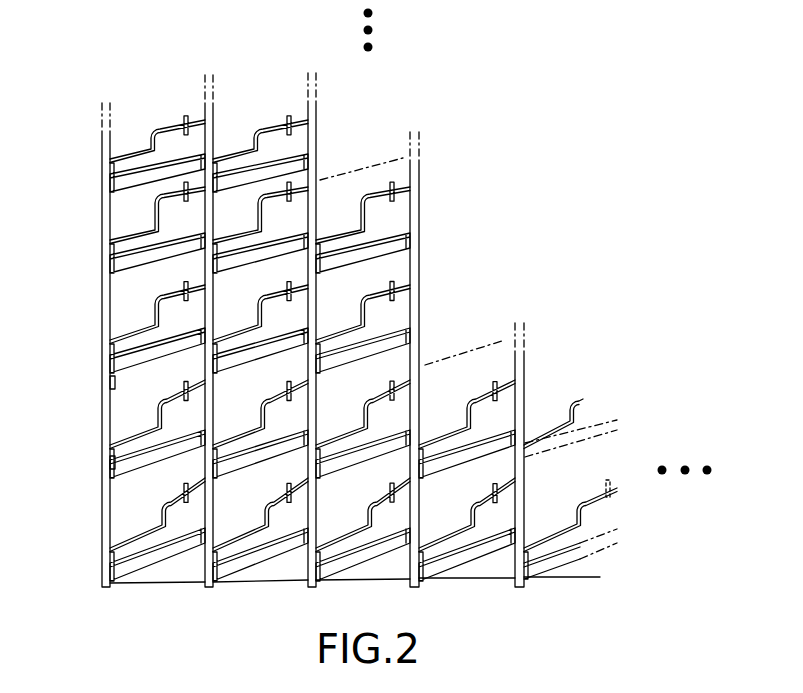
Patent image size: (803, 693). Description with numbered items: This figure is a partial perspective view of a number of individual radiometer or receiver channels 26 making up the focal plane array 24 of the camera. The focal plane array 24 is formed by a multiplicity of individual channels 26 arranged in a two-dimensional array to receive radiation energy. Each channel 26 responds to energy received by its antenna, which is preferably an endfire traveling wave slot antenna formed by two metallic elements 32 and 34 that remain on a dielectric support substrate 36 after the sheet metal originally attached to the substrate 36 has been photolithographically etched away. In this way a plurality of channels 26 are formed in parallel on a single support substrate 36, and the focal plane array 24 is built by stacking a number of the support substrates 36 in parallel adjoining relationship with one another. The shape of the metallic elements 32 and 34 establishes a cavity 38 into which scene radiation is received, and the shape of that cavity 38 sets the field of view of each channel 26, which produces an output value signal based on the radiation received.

The focal plane array 24 is at (502, 598).
The channel 26 is at (98, 483).
The metallic element 32 is at (113, 386).
The metallic element 34 is at (113, 461).
The dielectric support substrate 36 is at (104, 162).
The cavity 38 is at (130, 222).